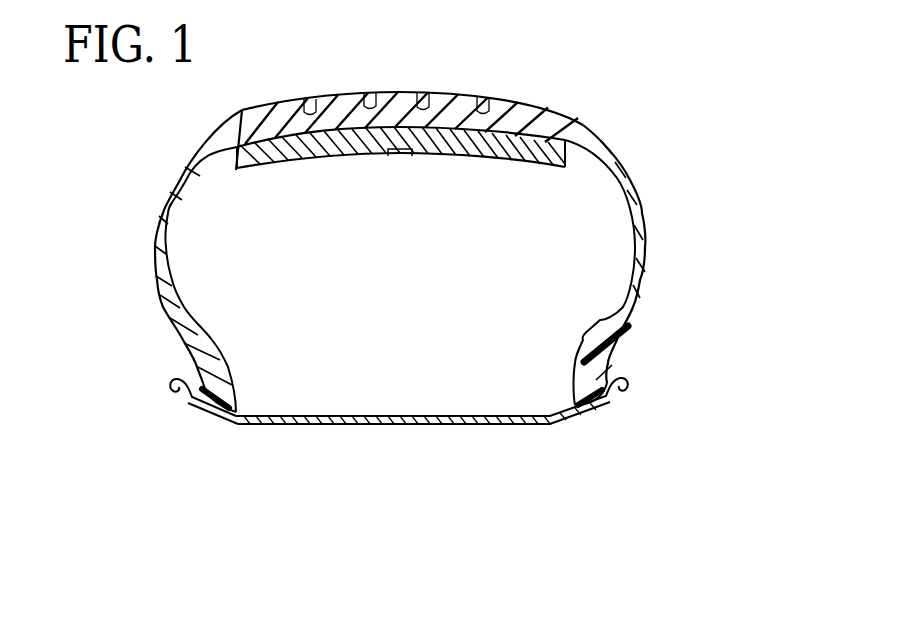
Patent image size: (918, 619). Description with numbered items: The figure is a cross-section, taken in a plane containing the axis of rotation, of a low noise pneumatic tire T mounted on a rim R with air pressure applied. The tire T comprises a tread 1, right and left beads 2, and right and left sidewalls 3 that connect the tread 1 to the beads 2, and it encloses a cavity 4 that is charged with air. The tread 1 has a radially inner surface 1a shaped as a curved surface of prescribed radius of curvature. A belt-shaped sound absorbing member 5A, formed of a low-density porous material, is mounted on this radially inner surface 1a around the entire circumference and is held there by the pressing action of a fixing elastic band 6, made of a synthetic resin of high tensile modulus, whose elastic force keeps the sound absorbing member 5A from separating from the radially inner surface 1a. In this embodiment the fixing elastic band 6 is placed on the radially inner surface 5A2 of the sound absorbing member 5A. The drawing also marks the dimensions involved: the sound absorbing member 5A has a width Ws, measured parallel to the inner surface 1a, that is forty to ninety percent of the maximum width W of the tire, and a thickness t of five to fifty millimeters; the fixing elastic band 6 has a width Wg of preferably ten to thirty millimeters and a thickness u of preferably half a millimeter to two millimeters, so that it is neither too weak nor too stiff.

The pneumatic tire T is at (670, 86).
The tread 1 is at (237, 105).
The radially inner surface 1a is at (305, 145).
The beads 2 is at (175, 369).
The sidewalls 3 is at (145, 255).
The cavity 4 is at (468, 286).
The belt-shaped sound absorbing member 5A is at (283, 168).
The radially inner surface of the belt-shaped sound absorbing member 5A2 is at (537, 167).
The fixing elastic band 6 is at (413, 157).
The rim R is at (492, 424).
The maximum width of the tire W is at (648, 340).
The width of the belt-shaped sound absorbing member Ws is at (563, 167).
The width of the fixing elastic band Wg is at (440, 183).
The thickness of the fixing elastic band u is at (412, 158).
The thickness of the belt-shaped sound absorbing member t is at (545, 139).